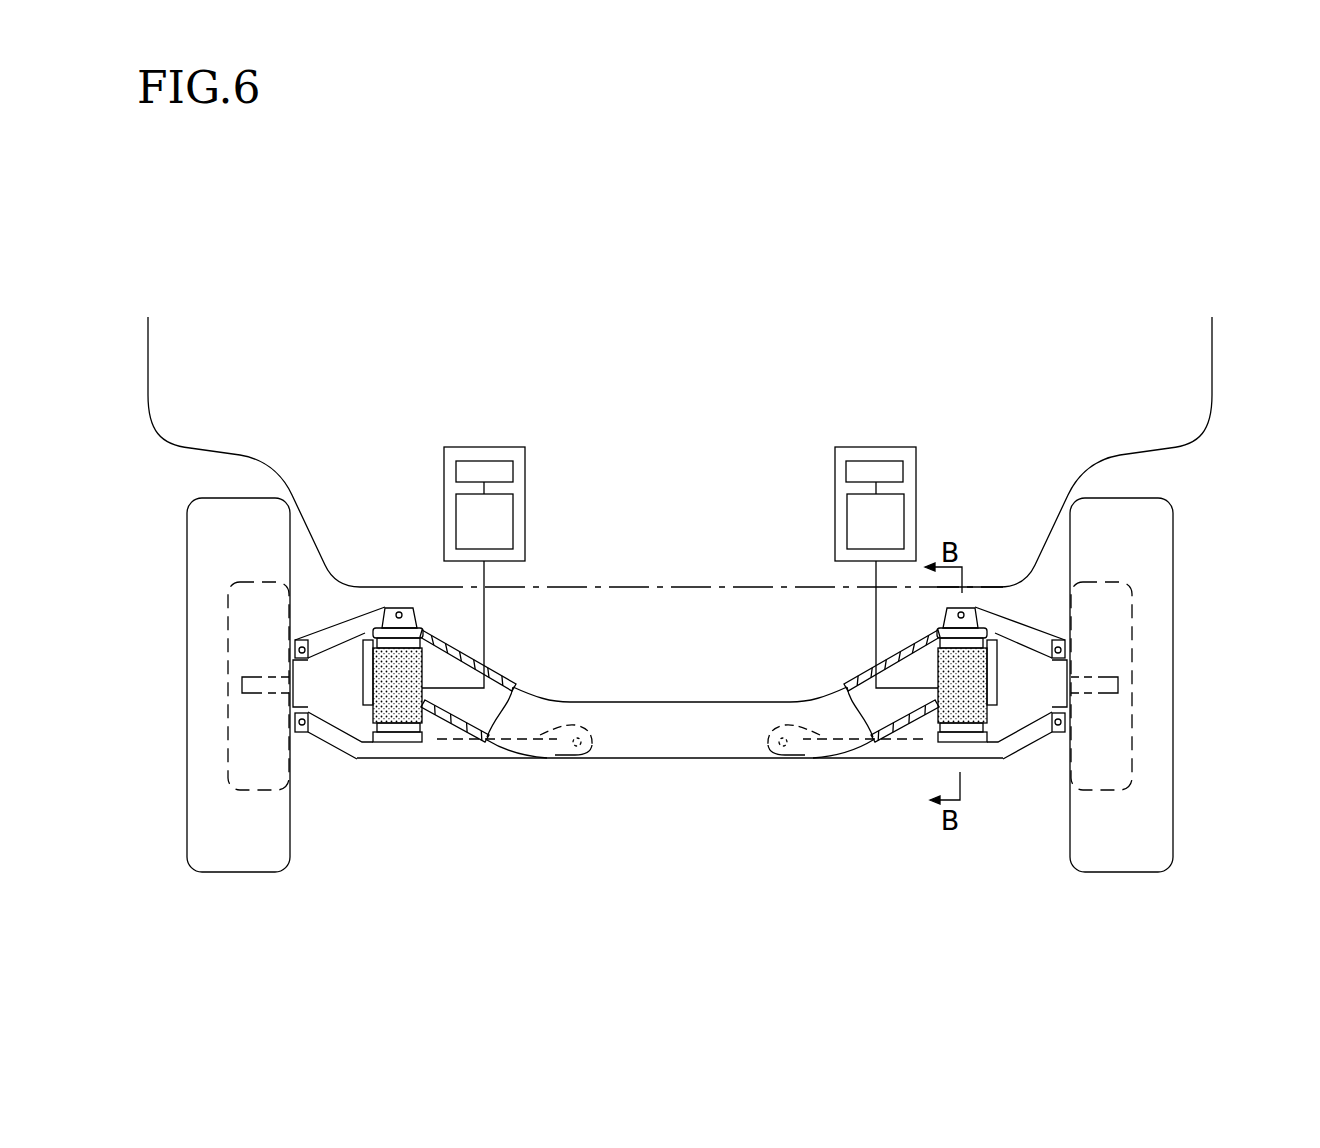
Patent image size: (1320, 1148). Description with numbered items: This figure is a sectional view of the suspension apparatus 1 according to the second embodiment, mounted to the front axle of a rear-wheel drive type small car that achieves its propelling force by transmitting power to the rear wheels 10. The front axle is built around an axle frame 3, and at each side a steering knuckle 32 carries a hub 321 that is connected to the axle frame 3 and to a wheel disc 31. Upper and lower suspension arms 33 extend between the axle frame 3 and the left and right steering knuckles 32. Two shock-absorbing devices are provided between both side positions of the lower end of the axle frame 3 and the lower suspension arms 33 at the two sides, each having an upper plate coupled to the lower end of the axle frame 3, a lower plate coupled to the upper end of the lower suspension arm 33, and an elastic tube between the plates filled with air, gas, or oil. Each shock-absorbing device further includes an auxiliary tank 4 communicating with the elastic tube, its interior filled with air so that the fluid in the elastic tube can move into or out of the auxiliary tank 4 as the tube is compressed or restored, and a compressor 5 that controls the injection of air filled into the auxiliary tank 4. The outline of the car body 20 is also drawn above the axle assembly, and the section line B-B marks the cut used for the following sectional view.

The suspension apparatus 1 is at (439, 731).
The axle frame 3 is at (735, 745).
The auxiliary tank 4 is at (513, 508).
The compressor 5 is at (513, 465).
The rear wheels 10 is at (247, 853).
The car body 20 is at (1178, 417).
The wheel disc 31 is at (228, 763).
The steering knuckle 32 is at (293, 708).
The hub 321 is at (262, 676).
The suspension arms 33 is at (340, 630).